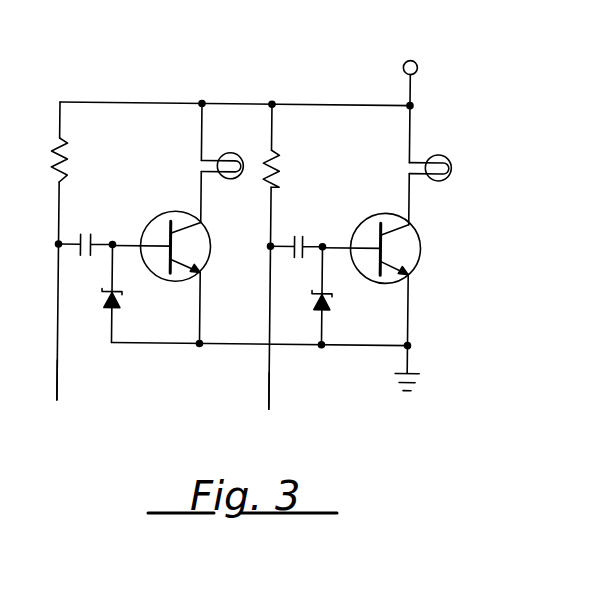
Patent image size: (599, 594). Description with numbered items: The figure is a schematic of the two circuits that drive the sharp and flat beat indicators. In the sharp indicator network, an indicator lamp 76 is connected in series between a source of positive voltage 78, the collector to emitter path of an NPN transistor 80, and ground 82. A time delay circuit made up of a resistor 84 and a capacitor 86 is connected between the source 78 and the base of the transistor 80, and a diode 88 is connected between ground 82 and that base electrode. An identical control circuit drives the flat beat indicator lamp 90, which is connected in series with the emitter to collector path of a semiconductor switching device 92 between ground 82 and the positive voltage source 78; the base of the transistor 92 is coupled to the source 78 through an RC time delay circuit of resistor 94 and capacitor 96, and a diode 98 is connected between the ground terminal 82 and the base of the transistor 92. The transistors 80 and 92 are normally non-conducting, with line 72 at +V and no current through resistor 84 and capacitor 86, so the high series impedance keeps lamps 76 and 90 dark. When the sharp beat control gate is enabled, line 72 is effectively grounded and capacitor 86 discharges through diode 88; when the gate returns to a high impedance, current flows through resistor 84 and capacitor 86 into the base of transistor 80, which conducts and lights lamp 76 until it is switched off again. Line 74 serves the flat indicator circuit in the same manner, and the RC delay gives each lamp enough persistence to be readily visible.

The line 72 is at (60, 385).
The second input line 74 is at (272, 390).
The indicator lamp 76 is at (224, 153).
The source of positive voltage 78 is at (416, 69).
The NPN transistor 80 is at (210, 228).
The ground 82 is at (416, 371).
The resistor 84 is at (68, 161).
The capacitor 86 is at (84, 232).
The diode 88 is at (122, 300).
The flat beat indicator lamp 90 is at (434, 152).
The semiconductor switching device 92 is at (421, 234).
The resistor 94 is at (280, 166).
The capacitor 96 is at (299, 233).
The diode 98 is at (333, 302).